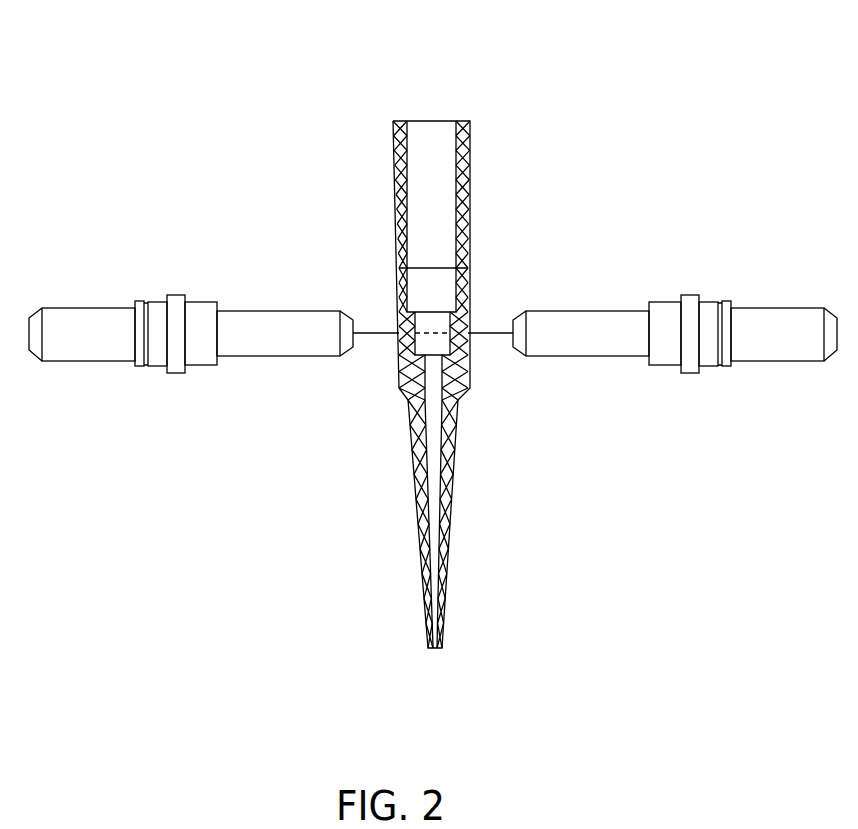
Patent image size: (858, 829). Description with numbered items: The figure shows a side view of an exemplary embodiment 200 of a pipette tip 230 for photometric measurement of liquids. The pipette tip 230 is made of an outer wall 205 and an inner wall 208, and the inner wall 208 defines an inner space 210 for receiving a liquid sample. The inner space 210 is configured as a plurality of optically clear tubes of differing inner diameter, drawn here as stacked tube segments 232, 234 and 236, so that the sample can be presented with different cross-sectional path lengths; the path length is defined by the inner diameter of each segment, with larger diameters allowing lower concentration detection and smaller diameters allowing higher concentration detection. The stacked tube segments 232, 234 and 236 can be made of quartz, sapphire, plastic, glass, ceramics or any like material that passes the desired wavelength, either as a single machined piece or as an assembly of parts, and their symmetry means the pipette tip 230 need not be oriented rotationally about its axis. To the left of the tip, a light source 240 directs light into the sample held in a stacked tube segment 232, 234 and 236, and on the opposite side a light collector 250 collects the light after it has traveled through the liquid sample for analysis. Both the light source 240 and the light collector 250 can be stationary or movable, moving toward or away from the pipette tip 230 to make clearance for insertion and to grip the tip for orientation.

The exemplary embodiment 200 is at (328, 68).
The outer wall 205 is at (470, 135).
The inner wall 208 is at (393, 149).
The inner space 210 is at (430, 200).
The pipette tip 230 is at (453, 529).
The stacked tube segment 232 is at (438, 285).
The stacked tube segment 234 is at (442, 320).
The stacked tube segment 236 is at (434, 371).
The light source 240 is at (88, 340).
The light collector 250 is at (778, 340).